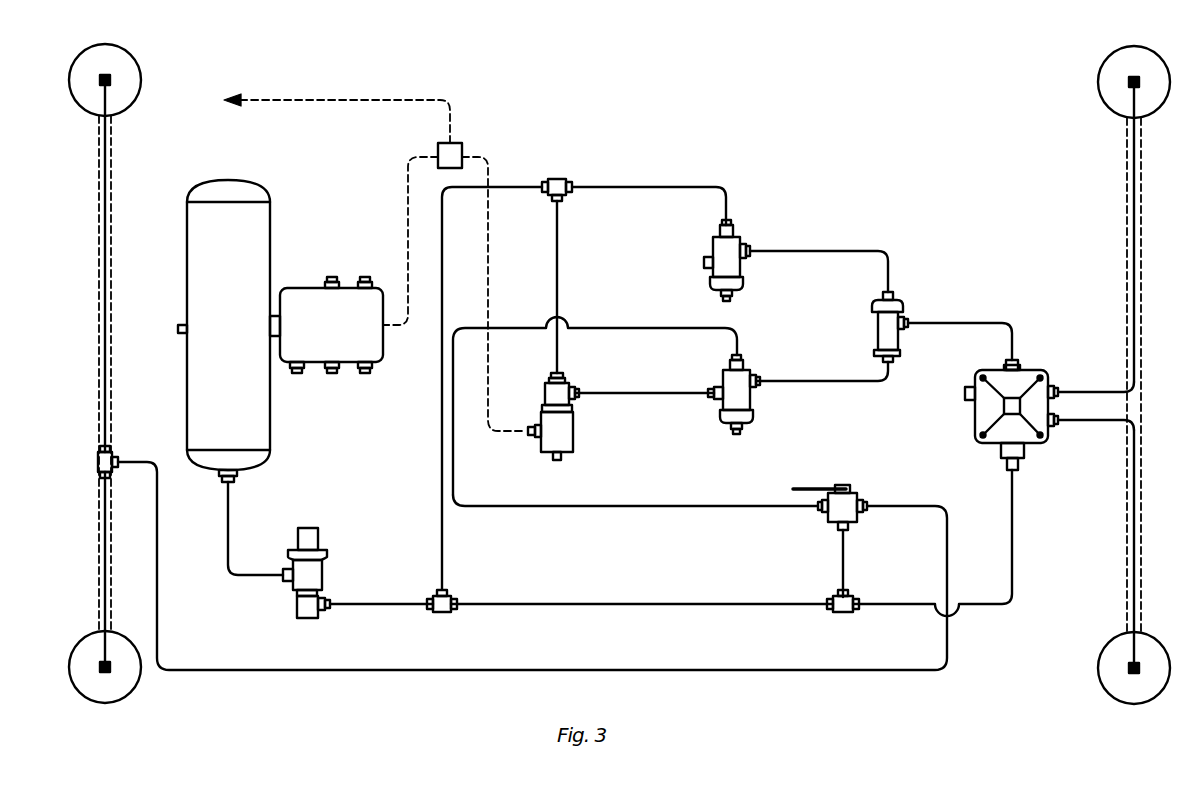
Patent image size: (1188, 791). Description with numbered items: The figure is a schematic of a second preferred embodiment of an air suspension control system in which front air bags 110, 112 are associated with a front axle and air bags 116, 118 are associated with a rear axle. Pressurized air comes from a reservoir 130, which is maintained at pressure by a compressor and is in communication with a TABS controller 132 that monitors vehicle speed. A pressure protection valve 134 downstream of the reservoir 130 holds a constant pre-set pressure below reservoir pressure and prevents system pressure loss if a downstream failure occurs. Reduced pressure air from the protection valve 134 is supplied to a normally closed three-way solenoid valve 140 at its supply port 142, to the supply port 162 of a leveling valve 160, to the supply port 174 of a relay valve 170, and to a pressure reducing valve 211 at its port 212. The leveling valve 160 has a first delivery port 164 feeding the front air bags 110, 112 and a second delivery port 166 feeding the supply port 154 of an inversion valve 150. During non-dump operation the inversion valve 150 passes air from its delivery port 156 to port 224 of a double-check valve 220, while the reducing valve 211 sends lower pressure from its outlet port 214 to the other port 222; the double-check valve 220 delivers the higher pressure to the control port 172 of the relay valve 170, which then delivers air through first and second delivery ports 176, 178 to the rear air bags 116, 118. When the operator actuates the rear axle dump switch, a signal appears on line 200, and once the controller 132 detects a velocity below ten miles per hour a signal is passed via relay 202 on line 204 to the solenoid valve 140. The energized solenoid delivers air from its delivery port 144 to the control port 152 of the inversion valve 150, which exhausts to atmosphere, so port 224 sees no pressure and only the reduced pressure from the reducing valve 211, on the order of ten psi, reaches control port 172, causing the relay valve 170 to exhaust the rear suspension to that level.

The front air bag 110 is at (127, 80).
The front air bag 112 is at (118, 688).
The rear air bag 116 is at (1118, 62).
The rear air bag 118 is at (1112, 690).
The reservoir 130 is at (248, 255).
The TABS controller 132 is at (349, 378).
The pressure protection valve 134 is at (343, 560).
The solenoid valve 140 is at (598, 414).
The supply port 142 is at (562, 376).
The delivery port 144 is at (575, 400).
The inversion valve 150 is at (746, 373).
The control port 152 is at (728, 396).
The supply port 154 is at (737, 355).
The delivery port 156 is at (752, 386).
The leveling valve 160 is at (832, 504).
The supply port 162 is at (847, 528).
The first delivery port 164 is at (868, 500).
The second delivery port 166 is at (822, 513).
The relay valve 170 is at (994, 411).
The control port 172 is at (1023, 360).
The supply port 174 is at (1020, 472).
The first delivery port 176 is at (1060, 386).
The second delivery port 178 is at (1062, 426).
The line 200 is at (310, 100).
The relay 202 is at (463, 150).
The line 204 is at (488, 290).
The pressure reducing valve 211 is at (779, 238).
The port 212 is at (728, 228).
The outlet port 214 is at (748, 256).
The double-check valve 220 is at (947, 319).
The port 222 is at (892, 304).
The port 224 is at (890, 350).